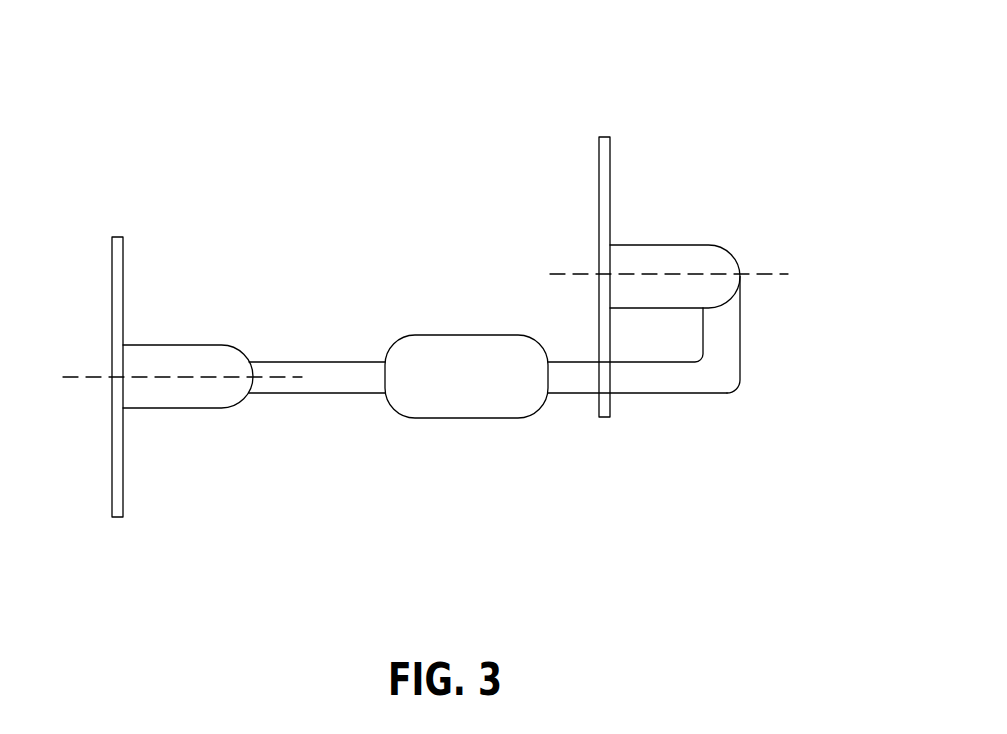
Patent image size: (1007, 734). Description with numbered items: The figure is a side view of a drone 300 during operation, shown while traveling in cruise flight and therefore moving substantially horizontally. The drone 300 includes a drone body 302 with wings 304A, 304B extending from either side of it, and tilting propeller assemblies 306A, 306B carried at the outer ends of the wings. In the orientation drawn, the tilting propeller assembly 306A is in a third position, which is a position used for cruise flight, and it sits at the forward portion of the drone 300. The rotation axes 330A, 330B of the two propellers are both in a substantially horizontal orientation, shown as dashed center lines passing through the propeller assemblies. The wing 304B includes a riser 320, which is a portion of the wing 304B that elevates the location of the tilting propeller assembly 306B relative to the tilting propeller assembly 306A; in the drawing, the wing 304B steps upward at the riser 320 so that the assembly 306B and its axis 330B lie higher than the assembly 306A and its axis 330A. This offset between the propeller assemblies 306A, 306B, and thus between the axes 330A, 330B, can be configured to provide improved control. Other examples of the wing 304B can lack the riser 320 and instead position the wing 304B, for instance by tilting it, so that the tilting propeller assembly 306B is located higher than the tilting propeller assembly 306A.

The drone 300 is at (253, 82).
The drone body 302 is at (476, 422).
The wing 304A is at (317, 402).
The wing 304B is at (672, 397).
The tilting propeller assembly 306A is at (192, 338).
The tilting propeller assembly 306B is at (723, 237).
The riser 320 is at (745, 328).
The rotation axis 330A is at (72, 375).
The rotation axis 330B is at (560, 272).